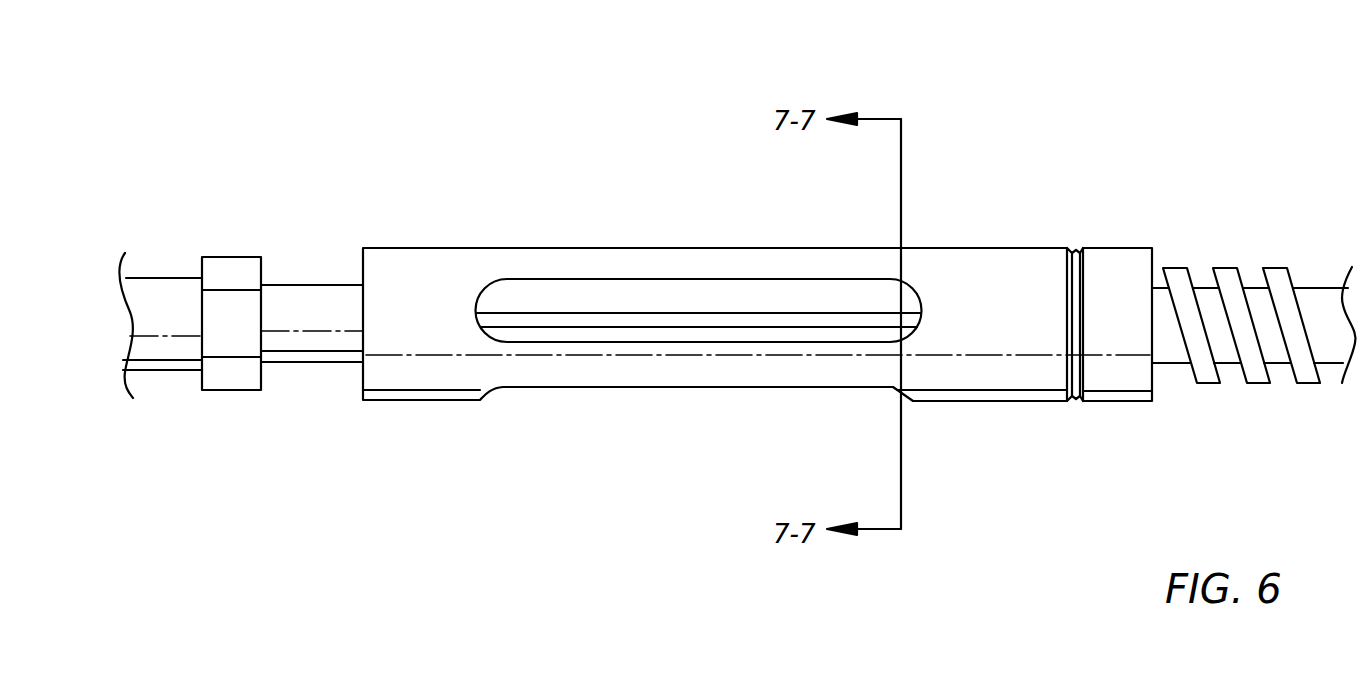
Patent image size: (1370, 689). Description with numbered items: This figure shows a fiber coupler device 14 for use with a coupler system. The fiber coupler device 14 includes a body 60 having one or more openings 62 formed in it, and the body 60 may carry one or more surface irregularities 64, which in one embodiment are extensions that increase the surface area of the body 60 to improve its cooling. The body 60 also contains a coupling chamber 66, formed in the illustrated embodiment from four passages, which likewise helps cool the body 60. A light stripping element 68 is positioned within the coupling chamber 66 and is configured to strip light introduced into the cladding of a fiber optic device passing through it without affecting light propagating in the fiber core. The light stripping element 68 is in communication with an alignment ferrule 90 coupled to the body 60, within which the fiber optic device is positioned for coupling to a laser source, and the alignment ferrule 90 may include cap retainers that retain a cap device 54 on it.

The fiber coupler device 14 is at (1208, 146).
The cap device 54 is at (217, 257).
The alignment ferrule 90 is at (308, 285).
The body 60 is at (756, 280).
The openings 62 is at (753, 279).
The surface irregularities 64 is at (1075, 252).
The coupling chamber 66 is at (647, 300).
The light stripping element 68 is at (515, 320).